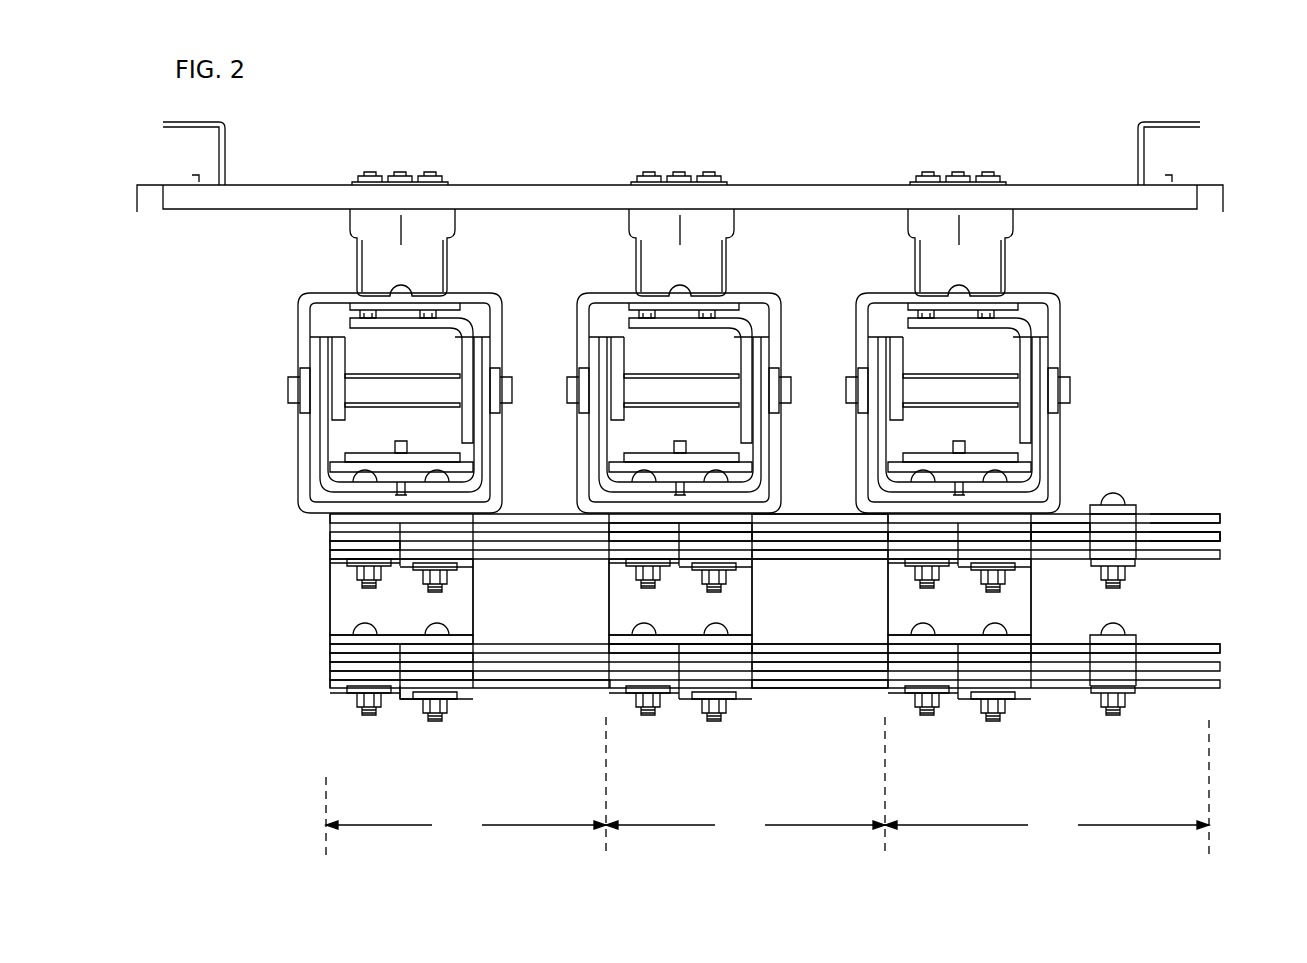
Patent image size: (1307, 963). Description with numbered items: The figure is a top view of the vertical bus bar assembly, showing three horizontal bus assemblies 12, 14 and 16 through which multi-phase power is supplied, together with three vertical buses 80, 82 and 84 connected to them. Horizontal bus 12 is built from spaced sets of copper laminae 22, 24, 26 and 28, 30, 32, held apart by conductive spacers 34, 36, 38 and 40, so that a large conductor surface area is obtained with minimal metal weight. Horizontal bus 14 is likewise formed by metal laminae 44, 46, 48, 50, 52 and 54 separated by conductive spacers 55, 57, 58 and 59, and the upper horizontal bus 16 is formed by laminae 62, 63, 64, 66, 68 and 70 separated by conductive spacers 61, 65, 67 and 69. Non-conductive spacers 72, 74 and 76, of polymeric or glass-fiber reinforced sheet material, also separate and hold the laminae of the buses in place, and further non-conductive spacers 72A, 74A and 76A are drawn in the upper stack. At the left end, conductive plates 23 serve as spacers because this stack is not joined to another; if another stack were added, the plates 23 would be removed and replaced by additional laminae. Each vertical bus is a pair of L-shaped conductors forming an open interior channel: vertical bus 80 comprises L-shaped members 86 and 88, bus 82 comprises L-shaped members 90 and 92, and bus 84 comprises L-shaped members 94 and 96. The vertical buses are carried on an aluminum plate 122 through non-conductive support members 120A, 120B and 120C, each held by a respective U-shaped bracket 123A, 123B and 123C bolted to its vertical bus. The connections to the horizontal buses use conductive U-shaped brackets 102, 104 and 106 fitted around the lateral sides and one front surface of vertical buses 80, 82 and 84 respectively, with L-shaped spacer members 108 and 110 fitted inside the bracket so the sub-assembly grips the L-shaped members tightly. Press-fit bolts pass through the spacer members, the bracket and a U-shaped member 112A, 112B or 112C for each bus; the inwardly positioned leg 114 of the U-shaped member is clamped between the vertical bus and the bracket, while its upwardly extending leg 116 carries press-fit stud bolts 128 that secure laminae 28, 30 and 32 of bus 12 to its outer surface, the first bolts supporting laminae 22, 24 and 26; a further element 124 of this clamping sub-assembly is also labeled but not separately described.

The horizontal bus assembly 12 is at (466, 825).
The horizontal bus assembly 14 is at (745, 825).
The upper horizontal bus assembly 16 is at (1047, 825).
The metal lamina 22 is at (505, 516).
The conductive plate 23 is at (330, 525).
The metal lamina 24 is at (540, 528).
The metal lamina 26 is at (487, 560).
The metal lamina 28 is at (480, 648).
The metal lamina 30 is at (505, 688).
The metal lamina 32 is at (465, 692).
The conductive spacer 34 is at (330, 545).
The conductive spacer 36 is at (330, 560).
The conductive spacer 38 is at (360, 692).
The conductive spacer 40 is at (375, 645).
The metal lamina 44 is at (813, 517).
The metal lamina 46 is at (797, 538).
The metal lamina 48 is at (837, 557).
The metal lamina 50 is at (790, 650).
The metal lamina 52 is at (790, 667).
The metal lamina 54 is at (785, 690).
The conductive spacer 55 is at (742, 530).
The conductive spacer 57 is at (695, 537).
The conductive spacer 58 is at (737, 657).
The conductive spacer 59 is at (660, 700).
The conductive spacer 61 is at (1040, 528).
The lamina 62 is at (1220, 518).
The lamina 63 is at (1220, 537).
The lamina 64 is at (1220, 556).
The conductive spacer 65 is at (965, 540).
The lamina 66 is at (1220, 648).
The conductive spacer 67 is at (1040, 650).
The lamina 68 is at (1220, 667).
The conductive spacer 69 is at (975, 682).
The lamina 70 is at (1220, 683).
The non-conductive spacer 72 is at (1105, 650).
The non-conductive spacer 72A is at (1125, 520).
The non-conductive spacer 74 is at (1130, 650).
The non-conductive spacer 74A is at (1130, 530).
The non-conductive spacer 76 is at (1125, 690).
The non-conductive spacer 76A is at (1125, 552).
The vertical bus 80 is at (363, 293).
The vertical bus 82 is at (681, 301).
The vertical bus 84 is at (975, 299).
The L-shaped member 86 is at (332, 425).
The L-shaped member 88 is at (440, 325).
The L-shaped member 90 is at (612, 340).
The L-shaped member 92 is at (740, 325).
The L-shaped member 94 is at (887, 345).
The L-shaped member 96 is at (1015, 320).
The U-shaped bracket 102 is at (485, 462).
The U-shaped bracket 104 is at (770, 450).
The U-shaped bracket 106 is at (1045, 440).
The spacer member 108 is at (885, 440).
The spacer member 110 is at (1035, 365).
The U-shaped member 112A is at (430, 612).
The U-shaped member 112B is at (718, 614).
The U-shaped member 112C is at (1018, 616).
The inwardly positioned leg 114 is at (1030, 500).
The upwardly extending leg 116 is at (330, 667).
The non-conductive support member 120A is at (435, 225).
The non-conductive support member 120B is at (712, 222).
The non-conductive support member 120C is at (985, 222).
The aluminum plate 122 is at (290, 193).
The U-shaped bracket 123A is at (330, 296).
The U-shaped bracket 123B is at (737, 298).
The U-shaped bracket 123C is at (1060, 305).
The clamp 124 is at (330, 636).
The press fit stud bolt 128 is at (430, 716).